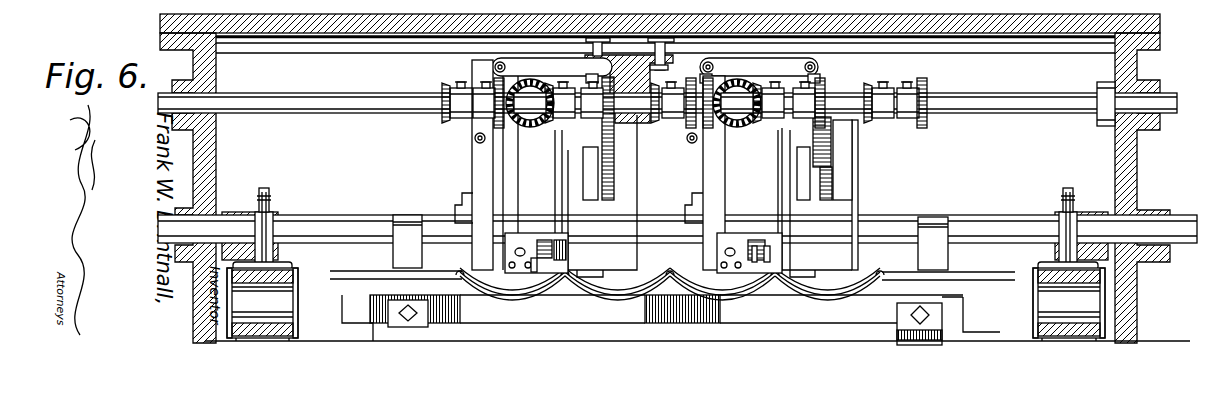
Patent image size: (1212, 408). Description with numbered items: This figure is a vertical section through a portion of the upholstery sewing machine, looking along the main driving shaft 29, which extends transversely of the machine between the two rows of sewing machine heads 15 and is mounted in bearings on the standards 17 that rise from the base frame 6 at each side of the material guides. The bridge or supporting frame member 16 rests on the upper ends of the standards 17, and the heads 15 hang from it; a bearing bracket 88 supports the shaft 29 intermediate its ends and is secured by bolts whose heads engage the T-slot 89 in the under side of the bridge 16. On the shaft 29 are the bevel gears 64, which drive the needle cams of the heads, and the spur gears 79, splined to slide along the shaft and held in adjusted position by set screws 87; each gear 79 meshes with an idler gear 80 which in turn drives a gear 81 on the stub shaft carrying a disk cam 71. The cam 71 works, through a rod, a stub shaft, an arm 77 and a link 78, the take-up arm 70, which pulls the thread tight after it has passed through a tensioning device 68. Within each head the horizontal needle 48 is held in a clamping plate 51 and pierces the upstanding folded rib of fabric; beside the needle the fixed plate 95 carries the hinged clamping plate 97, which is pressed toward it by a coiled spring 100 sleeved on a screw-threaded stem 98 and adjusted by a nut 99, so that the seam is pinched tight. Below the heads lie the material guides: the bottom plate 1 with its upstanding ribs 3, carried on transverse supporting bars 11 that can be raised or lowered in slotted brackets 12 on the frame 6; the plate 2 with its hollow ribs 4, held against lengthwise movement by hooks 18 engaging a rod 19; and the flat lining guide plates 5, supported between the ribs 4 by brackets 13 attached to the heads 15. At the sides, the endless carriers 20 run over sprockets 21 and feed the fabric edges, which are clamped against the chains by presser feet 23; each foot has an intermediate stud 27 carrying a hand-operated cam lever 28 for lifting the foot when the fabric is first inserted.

The bottom guide plate 1 is at (366, 280).
The upper guide plate 2 is at (372, 275).
The upstanding rib 3 is at (668, 272).
The hollow rib 4 is at (675, 272).
The lining guide plate 5 is at (830, 279).
The base frame 6 is at (710, 346).
The transverse supporting bar 11 is at (600, 316).
The slotted bracket 12 is at (440, 333).
The bracket 13 is at (855, 275).
The sewing machine head 15 is at (480, 187).
The supporting frame member 16 is at (964, 30).
The standard 17 is at (207, 144).
The hook 18 is at (407, 220).
The rod 19 is at (333, 222).
The endless carrier 20 is at (290, 277).
The sprocket 21 is at (666, 303).
The presser foot 23 is at (282, 268).
The intermediate stud 27 is at (184, 222).
The cam lever 28 is at (272, 184).
The main driving shaft 29 is at (307, 99).
The needle 48 is at (535, 272).
The clamping plate 51 is at (510, 247).
The bevel gear 64 is at (445, 118).
The tensioning device 68 is at (474, 138).
The take-up arm 70 is at (498, 172).
The disk cam 71 is at (593, 181).
The arm 77 is at (703, 68).
The link 78 is at (655, 67).
The spur gear 79 is at (502, 140).
The idler gear 80 is at (852, 148).
The gear 81 is at (835, 185).
The set screw 87 is at (486, 80).
The bearing bracket 88 is at (626, 56).
The T-slot 89 is at (936, 42).
The fixed plate 95 is at (782, 247).
The clamping plate 97 is at (755, 240).
The screw-threaded stem 98 is at (525, 243).
The nut 99 is at (755, 262).
The coiled spring 100 is at (768, 262).